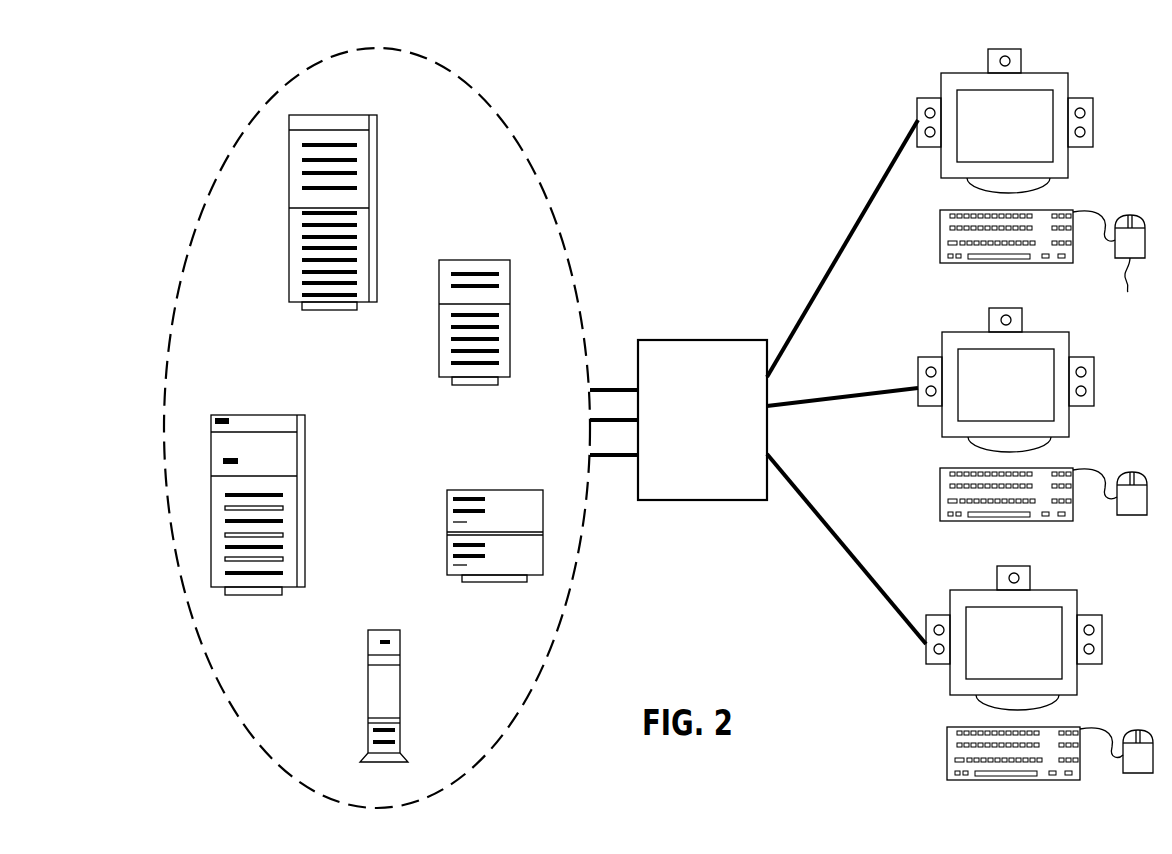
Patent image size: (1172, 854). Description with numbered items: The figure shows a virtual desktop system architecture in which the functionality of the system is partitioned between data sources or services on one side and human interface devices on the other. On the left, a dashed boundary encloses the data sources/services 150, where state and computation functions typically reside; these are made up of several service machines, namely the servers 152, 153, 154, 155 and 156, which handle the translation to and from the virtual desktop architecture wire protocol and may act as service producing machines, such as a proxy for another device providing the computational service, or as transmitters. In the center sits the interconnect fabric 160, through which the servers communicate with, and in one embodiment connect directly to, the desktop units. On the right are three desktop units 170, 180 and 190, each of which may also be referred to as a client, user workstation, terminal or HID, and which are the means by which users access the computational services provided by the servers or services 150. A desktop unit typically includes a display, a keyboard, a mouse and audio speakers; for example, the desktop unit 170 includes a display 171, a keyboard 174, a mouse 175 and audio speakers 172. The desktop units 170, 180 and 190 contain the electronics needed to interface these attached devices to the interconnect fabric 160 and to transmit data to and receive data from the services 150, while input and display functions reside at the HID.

The data sources/services 150 is at (535, 172).
The server 152 is at (377, 152).
The server 153 is at (439, 358).
The server 154 is at (305, 494).
The server 155 is at (447, 493).
The server 156 is at (400, 703).
The interconnect fabric 160 is at (687, 455).
The desktop unit 170 is at (993, 184).
The display 171 is at (1053, 92).
The audio speakers 172 is at (1093, 120).
The keyboard 174 is at (952, 262).
The mouse 175 is at (1109, 265).
The desktop unit 180 is at (916, 336).
The desktop unit 190 is at (948, 561).